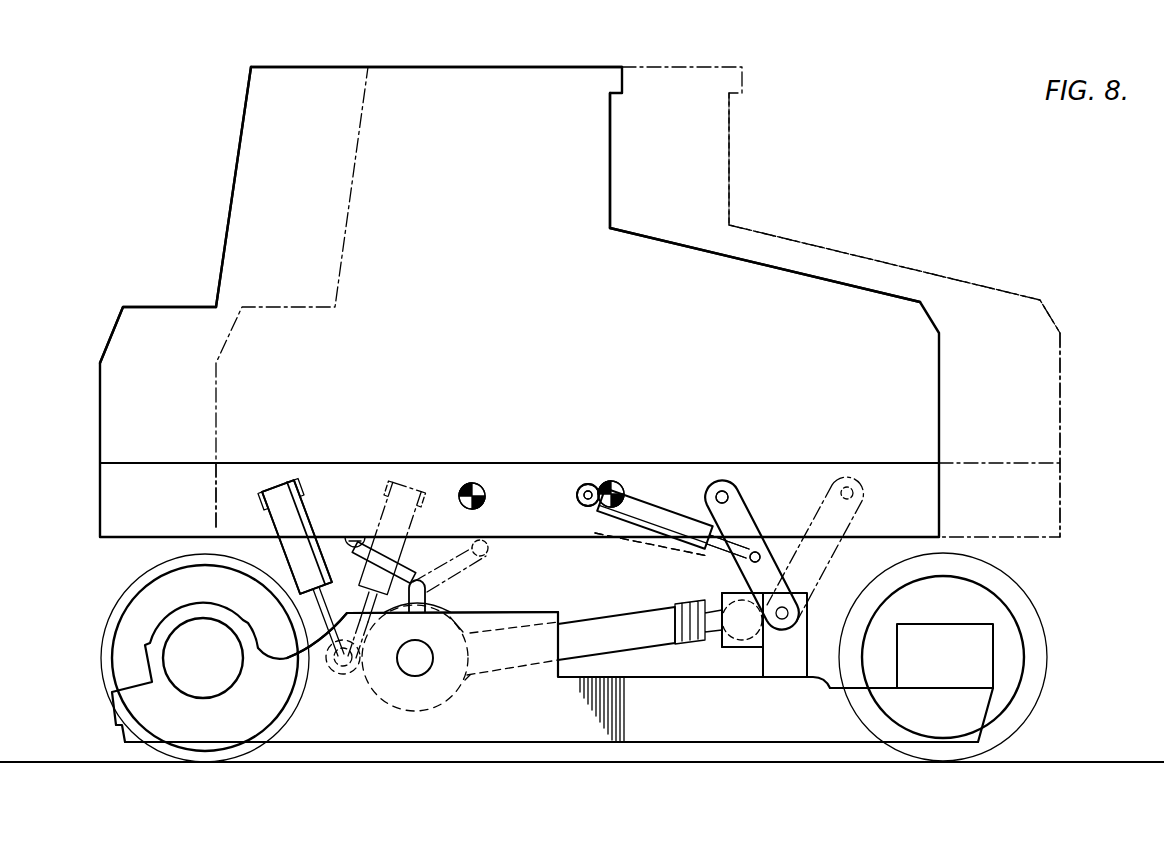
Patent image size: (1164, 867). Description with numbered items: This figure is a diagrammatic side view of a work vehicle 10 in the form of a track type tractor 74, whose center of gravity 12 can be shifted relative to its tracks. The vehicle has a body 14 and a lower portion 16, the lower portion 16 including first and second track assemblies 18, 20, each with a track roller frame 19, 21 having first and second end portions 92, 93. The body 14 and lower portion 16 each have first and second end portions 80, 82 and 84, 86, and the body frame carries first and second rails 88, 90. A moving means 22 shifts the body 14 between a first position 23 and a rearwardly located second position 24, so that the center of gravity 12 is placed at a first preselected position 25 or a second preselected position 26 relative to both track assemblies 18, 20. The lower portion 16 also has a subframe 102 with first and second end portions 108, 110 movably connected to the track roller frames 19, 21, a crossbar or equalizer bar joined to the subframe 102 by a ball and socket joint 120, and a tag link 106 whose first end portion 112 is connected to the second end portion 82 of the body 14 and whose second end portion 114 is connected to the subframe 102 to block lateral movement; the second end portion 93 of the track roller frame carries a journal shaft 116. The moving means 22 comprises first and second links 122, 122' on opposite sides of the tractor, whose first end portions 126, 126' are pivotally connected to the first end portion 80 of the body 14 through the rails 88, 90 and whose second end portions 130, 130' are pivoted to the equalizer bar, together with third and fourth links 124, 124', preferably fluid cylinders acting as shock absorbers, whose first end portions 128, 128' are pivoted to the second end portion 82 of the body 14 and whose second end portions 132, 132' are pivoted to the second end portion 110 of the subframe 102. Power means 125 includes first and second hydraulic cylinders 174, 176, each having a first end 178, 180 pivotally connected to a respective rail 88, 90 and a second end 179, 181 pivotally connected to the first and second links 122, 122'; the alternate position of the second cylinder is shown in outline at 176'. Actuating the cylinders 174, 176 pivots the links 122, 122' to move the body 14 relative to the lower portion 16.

The work vehicle 10 is at (222, 113).
The center of gravity 12 is at (588, 466).
The body 14 is at (520, 321).
The lower portion 16 is at (1046, 590).
The first track assembly 18 is at (603, 752).
The track roller frame 19 is at (513, 721).
The second track assembly 20 is at (681, 753).
The track roller frame 21 is at (490, 740).
The moving means 22 is at (660, 407).
The first position 23 is at (735, 152).
The second position 24 is at (612, 178).
The first preselected position 25 is at (640, 478).
The second preselected position 26 is at (465, 489).
The track type tractor 74 is at (205, 165).
The first end portion of the body 80 is at (985, 270).
The second end portion of the body 82 is at (135, 278).
The first end portion of the lower portion 84 is at (1075, 534).
The second end portion of the lower portion 86 is at (85, 558).
The first rail 88 is at (490, 484).
The second rail 90 is at (528, 468).
The first end portion of track roller frame 92 is at (877, 770).
The second end portion of track roller frame 93 is at (232, 768).
The subframe 102 is at (616, 648).
The tag link 106 is at (406, 552).
The first end portion of the subframe 108 is at (720, 658).
The second end portion of the subframe 110 is at (385, 724).
The first end portion of the tag link 112 is at (438, 593).
The second end portion of the tag link 114 is at (346, 523).
The journal shaft 116 is at (410, 667).
The ball and socket joint 120 is at (740, 661).
The first link 122 is at (757, 484).
The second link 122' is at (785, 526).
The third link 124 is at (295, 500).
The fourth link 124' is at (330, 540).
The power means 125 is at (598, 446).
The first end portion of the first link 126 is at (753, 526).
The first end portion of the second link 126' is at (778, 509).
The first end portion of the third link 128 is at (236, 530).
The first end portion of the fourth link 128' is at (165, 495).
The second end portion of the first link 130 is at (913, 610).
The second end portion of the second link 130' is at (910, 640).
The second end portion of the third link 132 is at (296, 689).
The second end portion of the fourth link 132' is at (285, 680).
The first hydraulic cylinder 174 is at (598, 530).
The second hydraulic cylinder 176 is at (684, 564).
The piston rod alternate position 176' is at (651, 544).
The first end of the first hydraulic cylinder 178 is at (575, 512).
The second end of the first hydraulic cylinder 179 is at (733, 567).
The first end of the second hydraulic cylinder 180 is at (573, 498).
The second end of the second hydraulic cylinder 181 is at (673, 617).